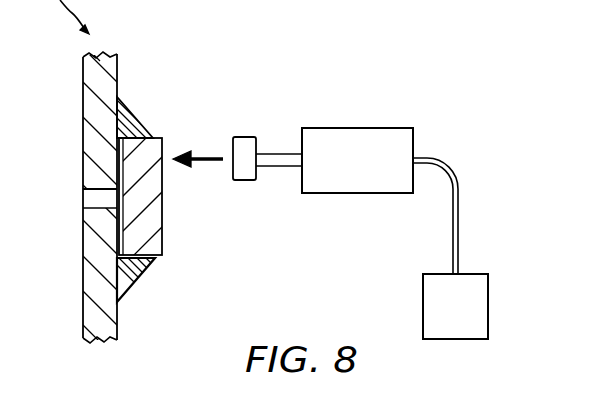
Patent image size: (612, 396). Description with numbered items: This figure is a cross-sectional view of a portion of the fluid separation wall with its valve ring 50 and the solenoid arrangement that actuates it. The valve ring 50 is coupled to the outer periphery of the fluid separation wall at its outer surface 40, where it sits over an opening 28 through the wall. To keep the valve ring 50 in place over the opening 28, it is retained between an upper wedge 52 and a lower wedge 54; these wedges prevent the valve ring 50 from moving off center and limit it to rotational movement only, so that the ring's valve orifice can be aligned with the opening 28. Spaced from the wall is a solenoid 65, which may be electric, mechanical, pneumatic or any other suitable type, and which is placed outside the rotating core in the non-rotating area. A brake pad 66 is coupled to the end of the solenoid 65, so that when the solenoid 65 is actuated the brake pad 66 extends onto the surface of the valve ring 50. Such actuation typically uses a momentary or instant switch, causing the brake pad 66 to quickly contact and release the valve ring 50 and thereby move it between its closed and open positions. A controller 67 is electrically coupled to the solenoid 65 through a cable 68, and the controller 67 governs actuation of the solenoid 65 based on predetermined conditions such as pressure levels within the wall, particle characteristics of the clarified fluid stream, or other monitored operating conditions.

The opening 28 is at (92, 198).
The outer surface 40 is at (83, 103).
The valve ring 50 is at (163, 202).
The upper wedge 52 is at (132, 113).
The lower wedge 54 is at (135, 287).
The solenoid 65 is at (371, 128).
The brake pad 66 is at (243, 137).
The controller 67 is at (489, 305).
The cable 68 is at (460, 207).